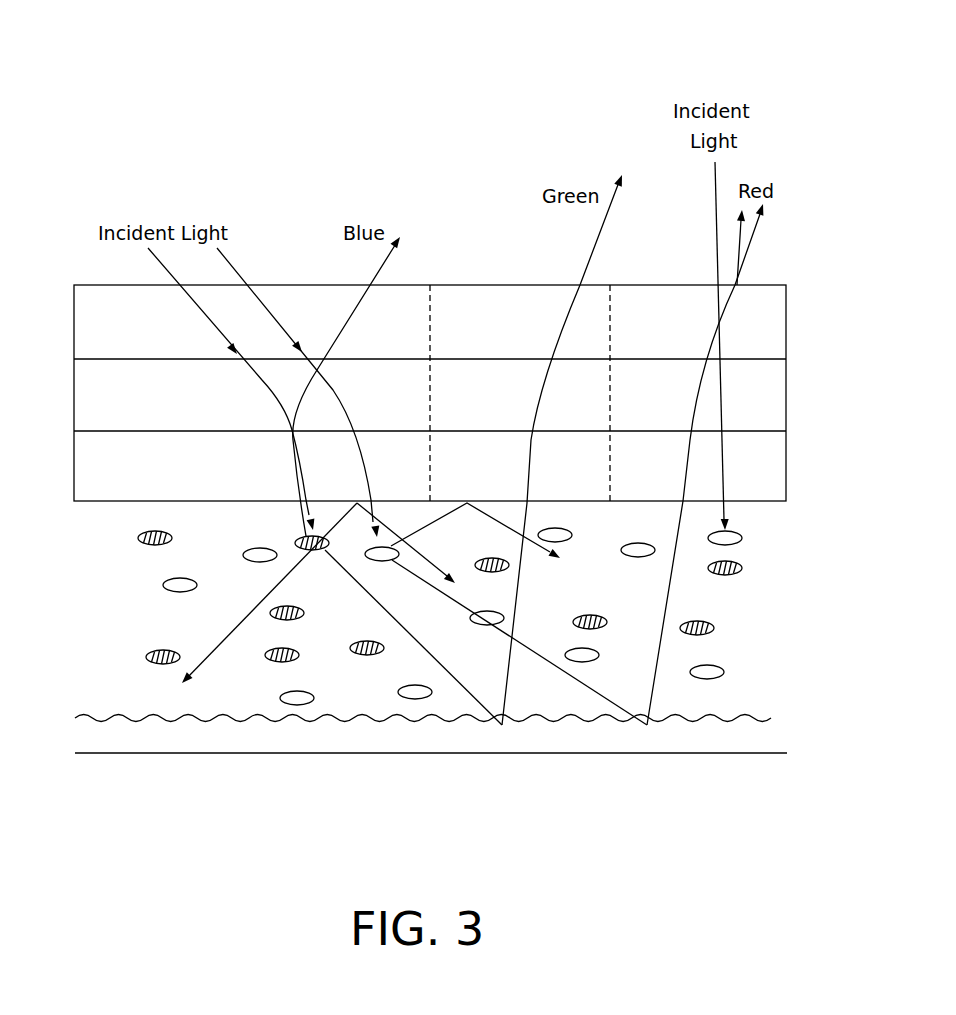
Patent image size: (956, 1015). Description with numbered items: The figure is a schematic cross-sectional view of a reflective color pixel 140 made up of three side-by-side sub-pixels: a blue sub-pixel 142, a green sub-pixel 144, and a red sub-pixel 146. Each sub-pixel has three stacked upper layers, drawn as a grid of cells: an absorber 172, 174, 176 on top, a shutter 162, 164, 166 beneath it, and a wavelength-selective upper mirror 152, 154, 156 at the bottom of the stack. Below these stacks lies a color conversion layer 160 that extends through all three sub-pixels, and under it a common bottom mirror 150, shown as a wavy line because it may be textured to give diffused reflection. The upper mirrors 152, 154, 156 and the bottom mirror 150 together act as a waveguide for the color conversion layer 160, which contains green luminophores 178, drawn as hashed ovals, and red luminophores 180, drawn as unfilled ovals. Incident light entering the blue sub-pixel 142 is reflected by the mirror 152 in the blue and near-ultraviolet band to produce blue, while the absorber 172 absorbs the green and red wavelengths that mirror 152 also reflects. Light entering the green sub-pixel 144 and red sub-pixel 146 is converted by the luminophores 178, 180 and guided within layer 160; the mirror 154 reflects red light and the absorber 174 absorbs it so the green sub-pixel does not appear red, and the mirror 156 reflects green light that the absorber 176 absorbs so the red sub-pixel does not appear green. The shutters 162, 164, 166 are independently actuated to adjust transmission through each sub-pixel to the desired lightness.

The reflective color pixel 140 is at (278, 120).
The blue sub-pixel 142 is at (287, 285).
The green sub-pixel 144 is at (467, 285).
The red sub-pixel 146 is at (782, 285).
The bottom mirror 150 is at (107, 712).
The upper mirror 152 is at (141, 494).
The upper mirror 154 is at (488, 496).
The upper mirror 156 is at (664, 501).
The color conversion layer 160 is at (137, 672).
The shutter 162 is at (149, 424).
The shutter 164 is at (499, 426).
The shutter 166 is at (663, 426).
The absorber 172 is at (141, 354).
The absorber 174 is at (499, 346).
The absorber 176 is at (664, 352).
The green luminophores 178 is at (714, 628).
The red luminophores 180 is at (742, 540).